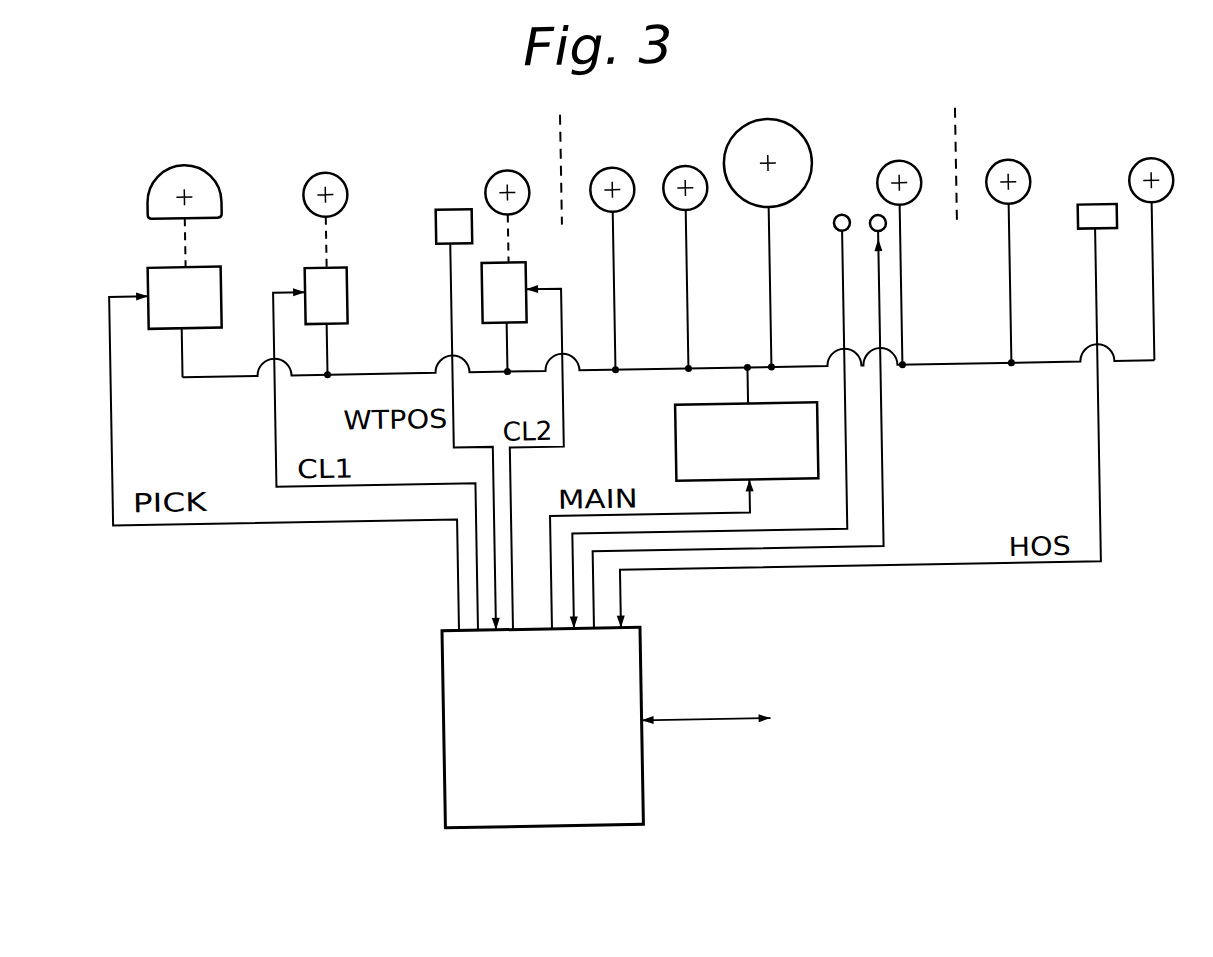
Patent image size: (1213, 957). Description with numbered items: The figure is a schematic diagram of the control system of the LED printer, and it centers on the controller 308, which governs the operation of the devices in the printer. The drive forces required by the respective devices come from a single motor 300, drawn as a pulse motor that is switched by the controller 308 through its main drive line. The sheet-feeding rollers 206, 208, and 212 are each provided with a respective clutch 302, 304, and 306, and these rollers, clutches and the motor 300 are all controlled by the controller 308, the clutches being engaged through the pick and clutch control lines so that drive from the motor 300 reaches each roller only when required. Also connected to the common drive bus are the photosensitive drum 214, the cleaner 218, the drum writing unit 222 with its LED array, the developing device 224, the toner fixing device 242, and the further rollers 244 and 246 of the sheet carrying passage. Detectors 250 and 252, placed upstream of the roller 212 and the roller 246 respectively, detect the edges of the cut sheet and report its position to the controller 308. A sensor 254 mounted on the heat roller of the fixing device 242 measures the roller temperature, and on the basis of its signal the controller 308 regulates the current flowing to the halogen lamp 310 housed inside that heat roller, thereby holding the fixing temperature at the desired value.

The roller 206 is at (189, 153).
The roller 208 is at (329, 166).
The roller 212 is at (509, 166).
The photosensitive drum 214 is at (775, 121).
The cleaner 218 is at (689, 168).
The drum writing unit 222 is at (740, 713).
The developing device 224 is at (607, 169).
The toner fixing device 242 is at (907, 162).
The stacker motor 244 is at (1013, 165).
The roller 246 is at (1163, 168).
The detector 250 is at (453, 207).
The detector 252 is at (1095, 213).
The sensor 254 is at (837, 231).
The motor 300 is at (675, 439).
The clutch 302 is at (225, 260).
The clutch 304 is at (348, 263).
The clutch 306 is at (528, 264).
The controller 308 is at (636, 790).
The halogen lamp 310 is at (878, 218).